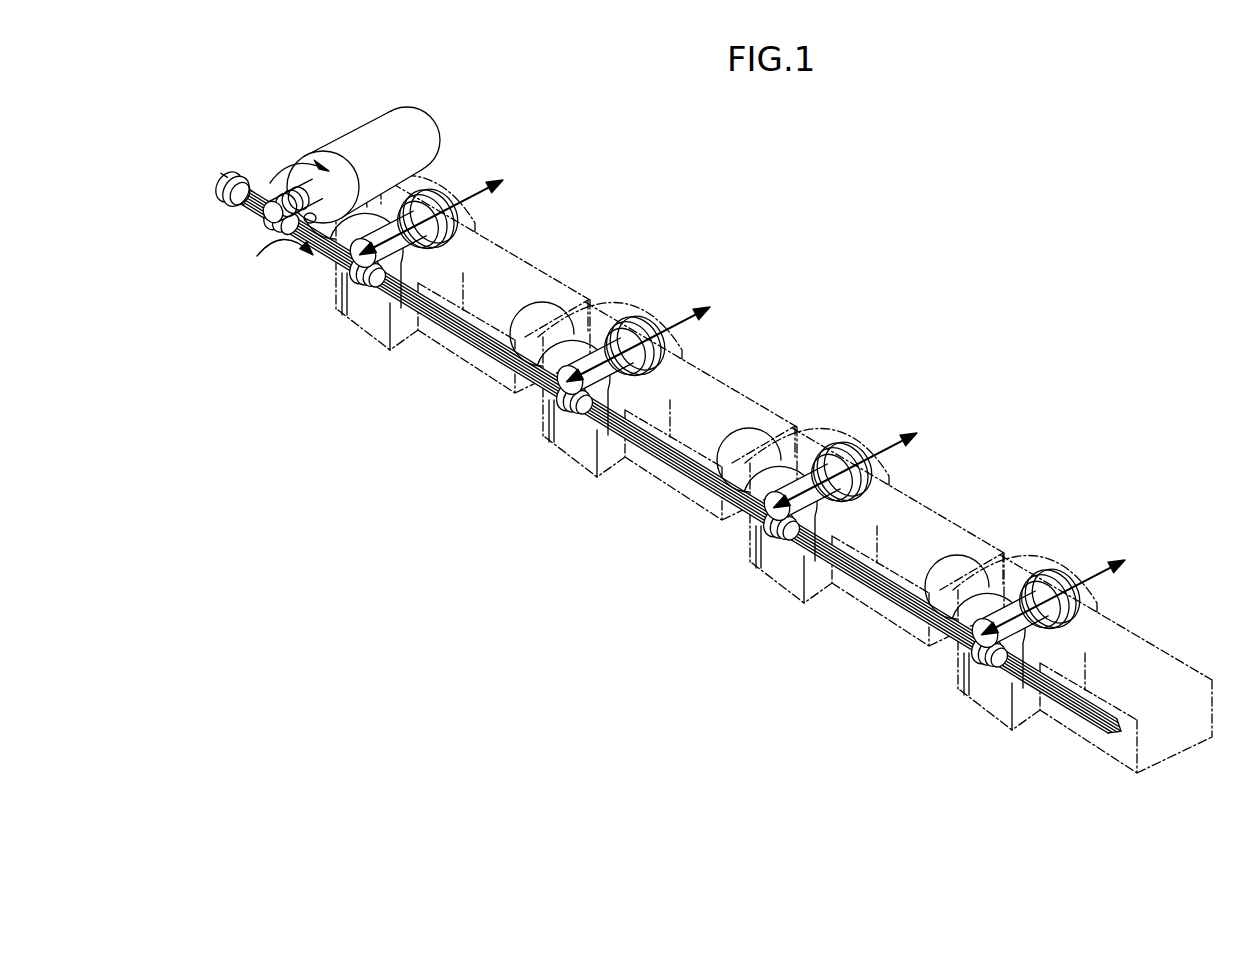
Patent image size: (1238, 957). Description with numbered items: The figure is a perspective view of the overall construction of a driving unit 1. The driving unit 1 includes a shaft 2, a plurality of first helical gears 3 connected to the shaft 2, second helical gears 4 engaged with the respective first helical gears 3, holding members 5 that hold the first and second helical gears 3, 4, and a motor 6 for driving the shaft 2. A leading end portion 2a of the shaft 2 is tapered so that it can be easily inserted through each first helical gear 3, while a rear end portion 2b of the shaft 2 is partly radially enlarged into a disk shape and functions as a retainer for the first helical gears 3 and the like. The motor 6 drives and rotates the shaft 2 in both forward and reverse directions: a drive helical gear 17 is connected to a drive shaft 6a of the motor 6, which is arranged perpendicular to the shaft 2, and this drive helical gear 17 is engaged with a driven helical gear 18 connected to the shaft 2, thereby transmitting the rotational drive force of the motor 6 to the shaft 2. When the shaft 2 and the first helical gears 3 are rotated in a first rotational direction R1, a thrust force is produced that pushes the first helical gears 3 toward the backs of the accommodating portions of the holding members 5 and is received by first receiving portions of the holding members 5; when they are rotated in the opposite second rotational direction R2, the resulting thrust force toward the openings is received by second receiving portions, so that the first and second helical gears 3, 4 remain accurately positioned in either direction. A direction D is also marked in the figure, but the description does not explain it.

The driving unit 1 is at (900, 342).
The shaft 2 is at (477, 348).
The leading end portion 2a is at (1118, 736).
The rear end portion 2b is at (232, 177).
The first helical gear 3 is at (350, 292).
The second helical gear 4 is at (437, 200).
The holding member 5 is at (470, 245).
The motor 6 is at (407, 135).
The drive shaft 6a is at (327, 190).
The drive helical gear 17 is at (222, 186).
The driven helical gear 18 is at (266, 225).
The first rotational direction R1 is at (283, 260).
The second rotational direction R2 is at (283, 178).
The feed direction D is at (808, 440).